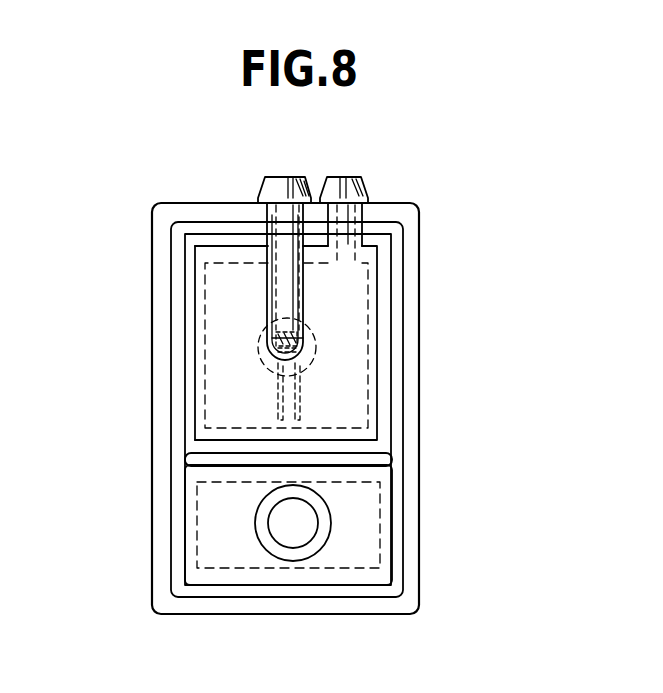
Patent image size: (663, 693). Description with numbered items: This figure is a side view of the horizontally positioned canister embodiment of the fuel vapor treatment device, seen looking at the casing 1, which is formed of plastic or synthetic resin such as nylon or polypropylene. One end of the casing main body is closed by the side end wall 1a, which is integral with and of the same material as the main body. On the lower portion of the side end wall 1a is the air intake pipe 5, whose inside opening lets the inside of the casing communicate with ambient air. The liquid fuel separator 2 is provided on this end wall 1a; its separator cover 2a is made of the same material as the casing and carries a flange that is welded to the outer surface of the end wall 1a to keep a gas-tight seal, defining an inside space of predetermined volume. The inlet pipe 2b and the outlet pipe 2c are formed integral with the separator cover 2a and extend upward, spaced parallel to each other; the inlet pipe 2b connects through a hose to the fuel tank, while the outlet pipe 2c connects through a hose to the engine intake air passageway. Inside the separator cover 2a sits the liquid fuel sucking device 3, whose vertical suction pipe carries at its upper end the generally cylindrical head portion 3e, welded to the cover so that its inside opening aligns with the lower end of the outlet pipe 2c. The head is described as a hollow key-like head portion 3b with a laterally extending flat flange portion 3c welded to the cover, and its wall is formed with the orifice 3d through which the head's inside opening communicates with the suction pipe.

The casing 1 is at (258, 598).
The side end wall 1a is at (192, 230).
The liquid fuel separator 2 is at (383, 268).
The separator cover 2a is at (357, 353).
The inlet pipe 2b is at (345, 185).
The outlet pipe 2c is at (283, 217).
The liquid fuel sucking device 3 is at (297, 357).
The key-like head portion 3b is at (280, 402).
The flange portion 3c is at (303, 340).
The orifice 3d is at (273, 357).
The head portion 3e is at (267, 338).
The air intake pipe 5 is at (318, 540).